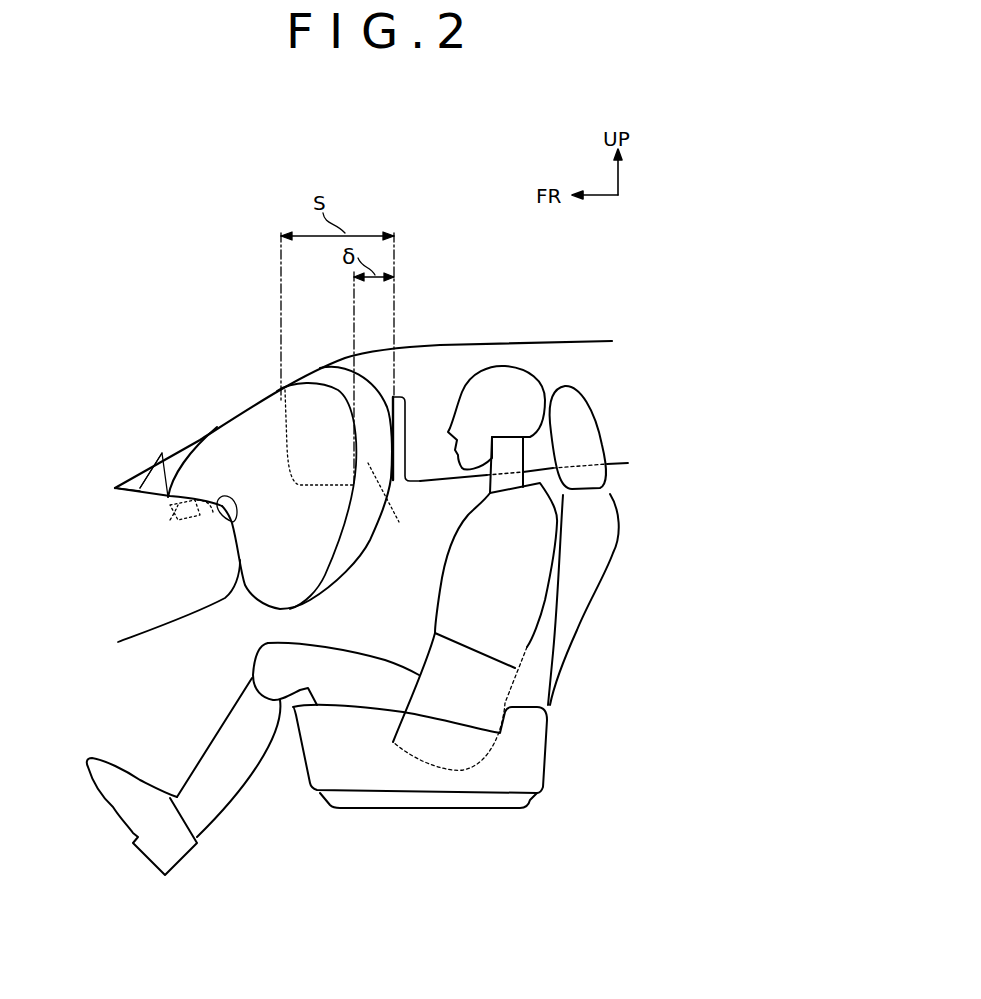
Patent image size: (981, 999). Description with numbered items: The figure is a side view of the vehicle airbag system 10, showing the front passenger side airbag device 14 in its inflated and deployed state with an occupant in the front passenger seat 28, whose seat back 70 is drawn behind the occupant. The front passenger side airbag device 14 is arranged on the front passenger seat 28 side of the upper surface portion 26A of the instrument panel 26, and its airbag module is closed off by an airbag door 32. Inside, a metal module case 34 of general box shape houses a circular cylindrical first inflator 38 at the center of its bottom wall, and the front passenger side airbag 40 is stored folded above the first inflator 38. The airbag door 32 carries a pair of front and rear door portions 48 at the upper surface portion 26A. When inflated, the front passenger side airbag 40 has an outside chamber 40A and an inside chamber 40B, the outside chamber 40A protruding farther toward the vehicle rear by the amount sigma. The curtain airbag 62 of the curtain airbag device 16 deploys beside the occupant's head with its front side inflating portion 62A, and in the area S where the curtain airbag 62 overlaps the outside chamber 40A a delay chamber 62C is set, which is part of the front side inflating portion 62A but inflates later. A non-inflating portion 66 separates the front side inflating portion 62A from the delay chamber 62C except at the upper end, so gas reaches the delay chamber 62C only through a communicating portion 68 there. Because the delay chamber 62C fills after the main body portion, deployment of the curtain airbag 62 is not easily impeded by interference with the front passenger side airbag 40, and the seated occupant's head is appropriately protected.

The occupant protection device 10 is at (247, 344).
The front passenger side airbag device 14 is at (222, 392).
The occupant 16 is at (580, 512).
The instrument panel 26 is at (141, 641).
The upper surface portion 26A is at (138, 487).
The front passenger seat 28 is at (480, 597).
The airbag door 32 is at (171, 489).
The module case 34 is at (167, 503).
The first inflator 38 is at (170, 520).
The front passenger side airbag 40 is at (292, 506).
The outside chamber 40A is at (353, 533).
The inside chamber 40B is at (305, 573).
The door portions 48 is at (167, 497).
The curtain airbag 62 is at (614, 468).
The front side inflating portion 62A is at (427, 465).
The delay chamber 62C is at (356, 471).
The non-inflating portion 66 is at (402, 420).
The communicating portion 68 is at (398, 367).
The seat back 70 is at (577, 565).